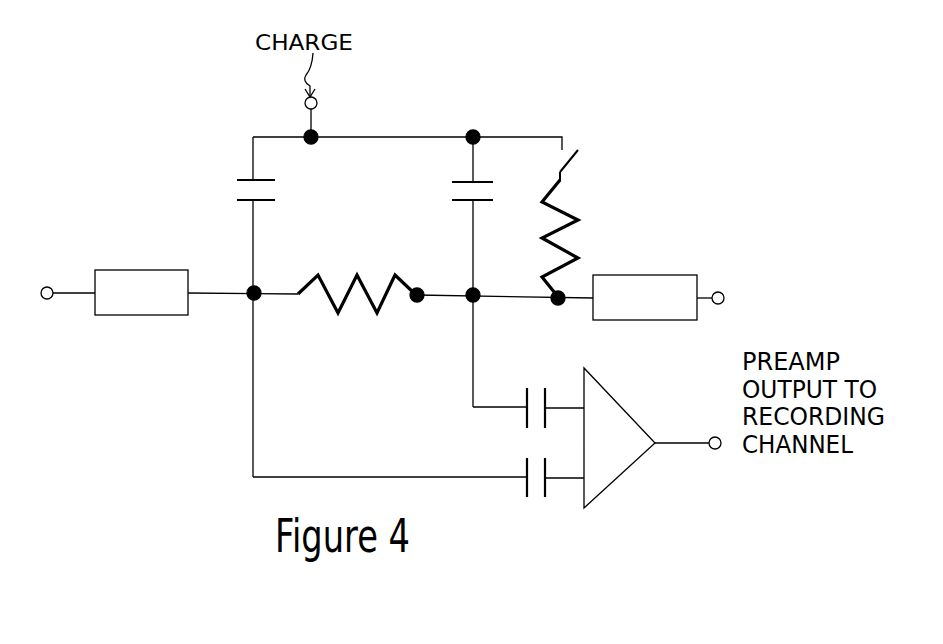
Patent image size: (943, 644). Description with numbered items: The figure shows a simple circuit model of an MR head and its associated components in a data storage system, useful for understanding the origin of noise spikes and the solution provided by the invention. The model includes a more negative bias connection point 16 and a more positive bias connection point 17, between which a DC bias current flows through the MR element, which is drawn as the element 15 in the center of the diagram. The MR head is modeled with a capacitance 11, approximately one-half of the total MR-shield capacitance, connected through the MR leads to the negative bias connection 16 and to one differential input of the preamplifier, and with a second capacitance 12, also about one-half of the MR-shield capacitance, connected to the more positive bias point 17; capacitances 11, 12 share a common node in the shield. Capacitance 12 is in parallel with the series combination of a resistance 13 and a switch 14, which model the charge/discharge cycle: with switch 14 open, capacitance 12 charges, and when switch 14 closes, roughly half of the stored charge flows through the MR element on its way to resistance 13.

The capacitance 11 is at (243, 172).
The second capacitance 12 is at (462, 172).
The resistance 13 is at (587, 233).
The switch 14 is at (582, 167).
The resistor 15 is at (348, 318).
The more negative bias connection point 16 is at (137, 278).
The more positive bias connection point 17 is at (670, 282).